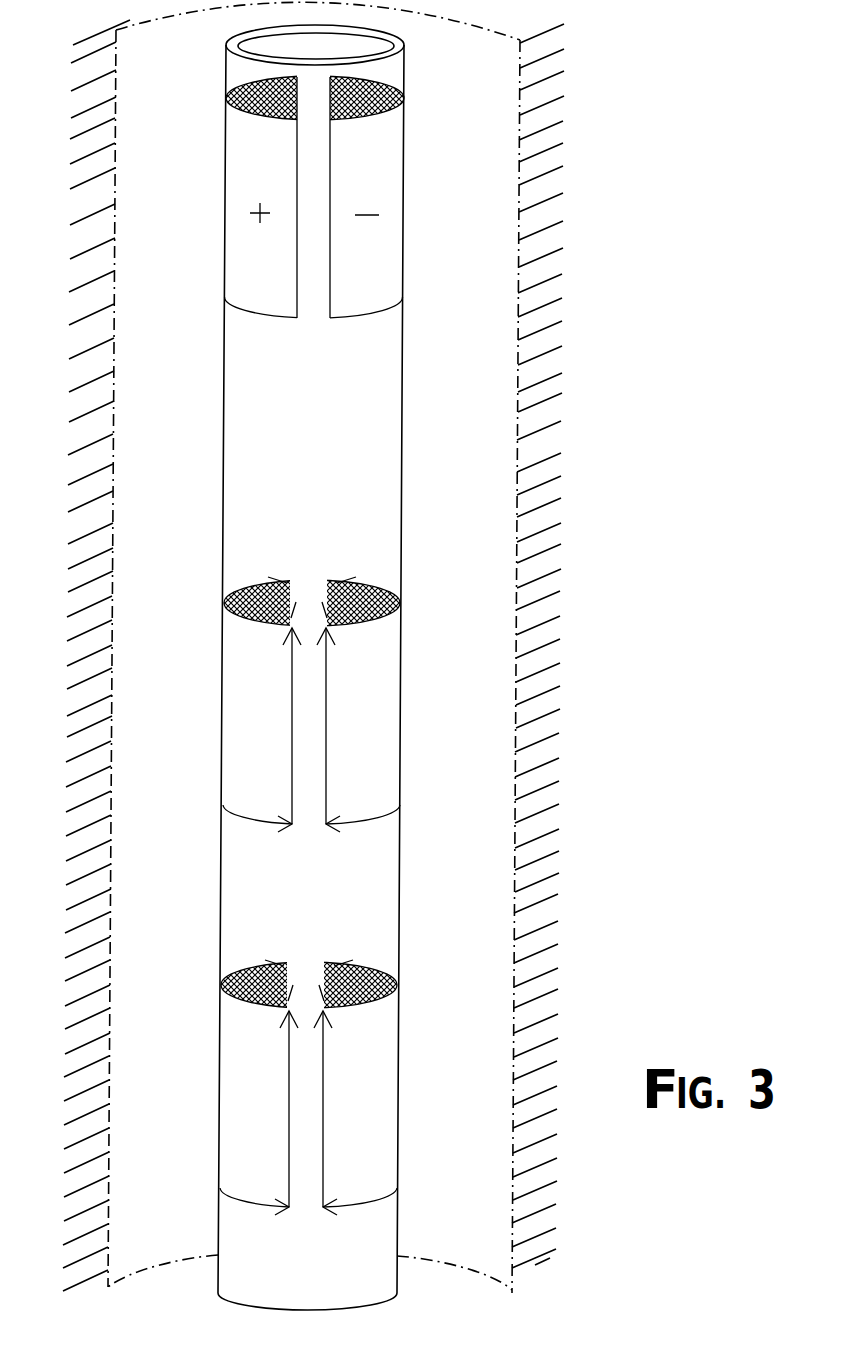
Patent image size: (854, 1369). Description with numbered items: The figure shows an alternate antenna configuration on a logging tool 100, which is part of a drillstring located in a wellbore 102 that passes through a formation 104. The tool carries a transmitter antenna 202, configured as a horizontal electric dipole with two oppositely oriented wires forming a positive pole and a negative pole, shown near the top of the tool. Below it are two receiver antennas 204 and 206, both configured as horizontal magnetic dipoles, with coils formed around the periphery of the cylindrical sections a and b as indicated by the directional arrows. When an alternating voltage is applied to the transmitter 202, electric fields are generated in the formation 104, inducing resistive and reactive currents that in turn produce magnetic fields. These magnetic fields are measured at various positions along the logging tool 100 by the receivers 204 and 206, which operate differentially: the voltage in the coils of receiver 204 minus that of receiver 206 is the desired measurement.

The logging tool 100 is at (402, 440).
The wellbore 102 is at (190, 519).
The formation 104 is at (102, 519).
The transmitter antenna 202 is at (234, 271).
The receiver antenna 204 is at (246, 732).
The receiver antenna 206 is at (237, 1103).